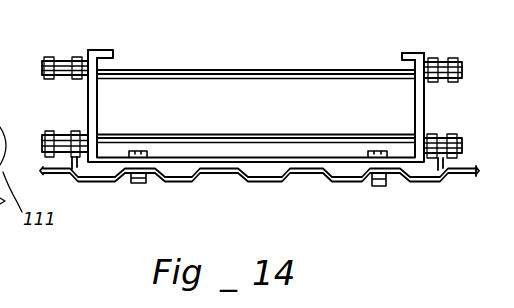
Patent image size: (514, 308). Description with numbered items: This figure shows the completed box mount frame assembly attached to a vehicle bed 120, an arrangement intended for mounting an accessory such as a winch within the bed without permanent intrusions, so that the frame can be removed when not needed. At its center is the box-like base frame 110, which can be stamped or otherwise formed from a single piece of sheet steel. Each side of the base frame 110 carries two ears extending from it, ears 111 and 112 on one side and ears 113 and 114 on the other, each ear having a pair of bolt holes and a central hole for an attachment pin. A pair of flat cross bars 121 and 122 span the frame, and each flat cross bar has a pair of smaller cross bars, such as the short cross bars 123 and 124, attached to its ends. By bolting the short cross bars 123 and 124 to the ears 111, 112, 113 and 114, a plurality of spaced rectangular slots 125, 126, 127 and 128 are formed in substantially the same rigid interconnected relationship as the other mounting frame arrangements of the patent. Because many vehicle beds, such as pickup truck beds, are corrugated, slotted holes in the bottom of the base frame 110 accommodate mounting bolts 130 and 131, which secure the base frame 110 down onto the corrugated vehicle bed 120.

The base frame 110 is at (99, 90).
The ear 111 is at (438, 59).
The ear 112 is at (440, 177).
The ear 113 is at (67, 57).
The ear 114 is at (71, 181).
The vehicle bed 120 is at (270, 182).
The flat cross bar 121 is at (292, 71).
The flat cross bar 122 is at (250, 135).
The short cross bar 123 is at (42, 64).
The short cross bar 124 is at (99, 70).
The rectangular slot 125 is at (438, 61).
The rectangular slot 126 is at (438, 134).
The rectangular slot 127 is at (63, 79).
The rectangular slot 128 is at (68, 138).
The mounting bolt 130 is at (150, 184).
The mounting bolt 131 is at (377, 187).